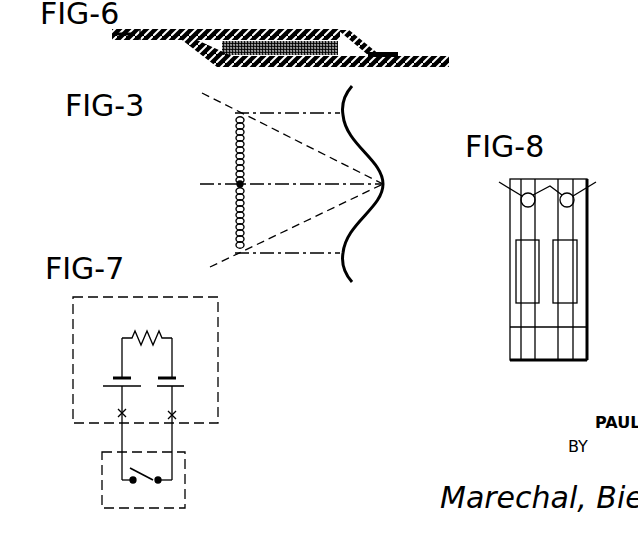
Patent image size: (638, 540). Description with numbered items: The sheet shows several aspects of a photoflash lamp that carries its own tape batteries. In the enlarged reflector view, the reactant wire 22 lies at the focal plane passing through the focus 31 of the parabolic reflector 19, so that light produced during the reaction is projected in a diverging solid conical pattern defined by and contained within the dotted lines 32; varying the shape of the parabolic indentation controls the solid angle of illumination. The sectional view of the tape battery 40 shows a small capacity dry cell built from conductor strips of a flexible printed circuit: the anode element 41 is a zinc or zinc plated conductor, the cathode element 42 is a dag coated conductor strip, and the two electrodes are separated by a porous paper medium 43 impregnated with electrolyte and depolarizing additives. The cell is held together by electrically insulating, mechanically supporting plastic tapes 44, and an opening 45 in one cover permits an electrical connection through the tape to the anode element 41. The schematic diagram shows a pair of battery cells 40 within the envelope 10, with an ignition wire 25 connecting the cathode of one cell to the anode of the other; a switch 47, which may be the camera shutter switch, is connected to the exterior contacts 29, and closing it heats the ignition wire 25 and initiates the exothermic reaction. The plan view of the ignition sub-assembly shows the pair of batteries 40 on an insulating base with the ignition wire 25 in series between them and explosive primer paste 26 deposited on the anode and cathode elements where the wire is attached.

In FIG. 7, the envelope 10 is at (218, 318).
In FIG. 3, the parabolic reflector 19 is at (387, 186).
In FIG. 3, the reactant wire 22 is at (235, 213).
In FIG. 8, the ignition wire 25 is at (552, 186).
In FIG. 7, the ignition wire 25 is at (146, 336).
In FIG. 8, the explosive primer paste 26 is at (521, 203).
In FIG. 7, the exterior contacts 29 is at (120, 413).
In FIG. 3, the focus 31 is at (238, 182).
In FIG. 3, the dotted lines 32 is at (228, 110).
In FIG. 6, the battery 40 is at (395, 50).
In FIG. 8, the battery 40 is at (498, 293).
In FIG. 7, the battery 40 is at (113, 382).
In FIG. 6, the anode element 41 is at (145, 40).
In FIG. 8, the anode element 41 is at (565, 228).
In FIG. 6, the cathode element 42 is at (423, 55).
In FIG. 8, the cathode element 42 is at (527, 228).
In FIG. 6, the porous paper medium 43 is at (262, 29).
In FIG. 8, the porous paper medium 43 is at (522, 266).
In FIG. 6, the plastic tapes 44 is at (220, 28).
In FIG. 8, the plastic tapes 44 is at (575, 350).
In FIG. 6, the opening 45 is at (140, 40).
In FIG. 7, the switch 47 is at (136, 485).